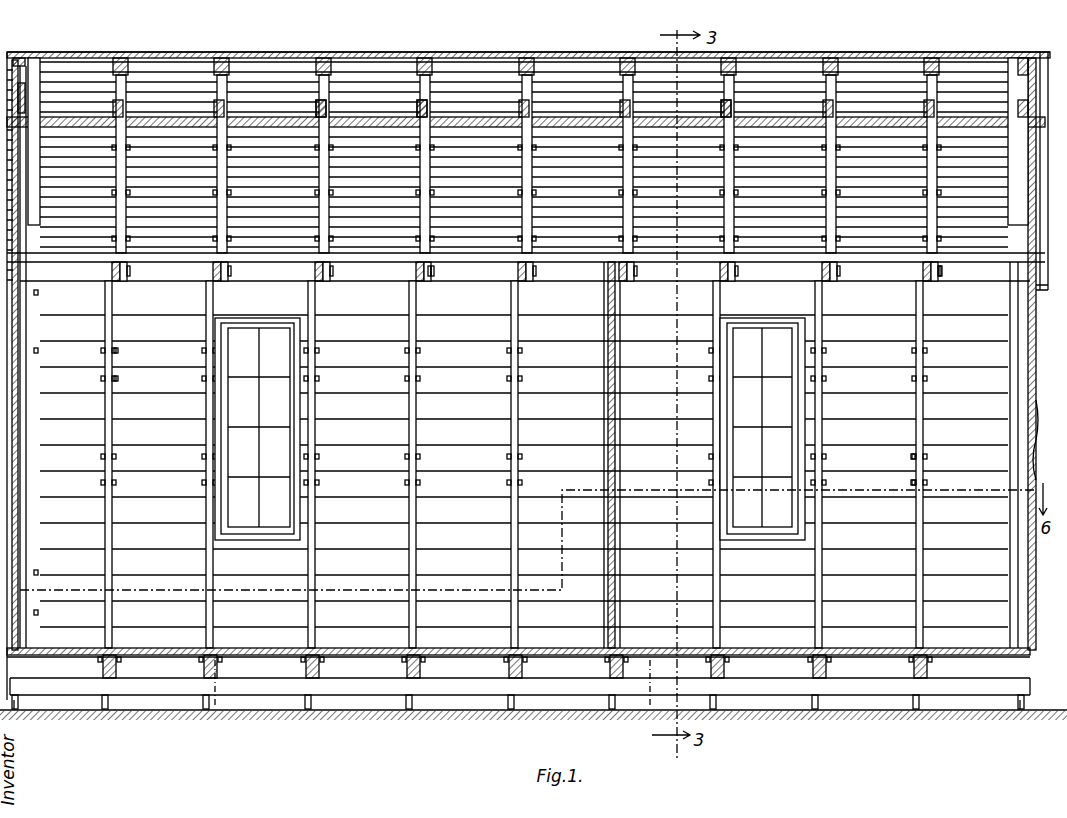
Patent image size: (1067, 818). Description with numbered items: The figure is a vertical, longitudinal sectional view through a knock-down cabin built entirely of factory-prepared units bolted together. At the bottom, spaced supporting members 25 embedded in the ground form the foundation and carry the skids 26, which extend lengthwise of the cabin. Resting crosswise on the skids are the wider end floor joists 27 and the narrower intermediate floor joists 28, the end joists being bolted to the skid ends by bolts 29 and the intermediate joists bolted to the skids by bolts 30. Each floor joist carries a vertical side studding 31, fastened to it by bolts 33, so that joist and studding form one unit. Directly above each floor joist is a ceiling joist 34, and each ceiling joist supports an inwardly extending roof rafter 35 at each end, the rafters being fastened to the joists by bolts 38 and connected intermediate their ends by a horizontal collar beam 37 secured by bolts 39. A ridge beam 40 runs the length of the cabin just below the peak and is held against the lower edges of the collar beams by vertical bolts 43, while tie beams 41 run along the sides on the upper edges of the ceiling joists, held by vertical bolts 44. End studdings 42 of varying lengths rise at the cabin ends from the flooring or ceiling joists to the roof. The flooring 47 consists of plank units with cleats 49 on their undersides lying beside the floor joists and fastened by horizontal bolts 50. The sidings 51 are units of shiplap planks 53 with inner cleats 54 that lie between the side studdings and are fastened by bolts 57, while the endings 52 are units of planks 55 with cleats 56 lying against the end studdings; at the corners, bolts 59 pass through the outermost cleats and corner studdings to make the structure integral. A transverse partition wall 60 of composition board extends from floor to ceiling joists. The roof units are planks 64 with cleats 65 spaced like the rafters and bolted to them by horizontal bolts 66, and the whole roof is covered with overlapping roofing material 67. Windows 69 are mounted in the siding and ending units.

The supporting members 25 is at (112, 700).
The skids 26 is at (338, 695).
The end floor joists 27 is at (22, 640).
The intermediate floor joists 28 is at (112, 656).
The headed and nutted bolts 29 is at (18, 700).
The headed and nutted bolts 30 is at (215, 706).
The side studding 31 is at (105, 507).
The headed and nutted bolts 33 is at (40, 660).
The ceiling joists 34 is at (232, 272).
The roof rafter 35 is at (230, 70).
The collar beam 37 is at (438, 112).
The headed and nutted bolts 38 is at (130, 272).
The headed and nutted bolts 39 is at (335, 110).
The ridge beam 40 is at (863, 117).
The tie beams 41 is at (366, 262).
The end studdings 42 is at (36, 176).
The headed and nutted bolts 43 is at (24, 98).
The headed and nutted bolts 44 is at (530, 282).
The flooring 47 is at (455, 657).
The cleats 49 is at (1008, 684).
The headed and nutted bolts 50 is at (40, 668).
The sidings 51 is at (477, 486).
The endings 52 is at (1038, 462).
The planks 53 is at (445, 486).
The cleats 54 is at (100, 378).
The planks 55 is at (1036, 375).
The cleats 56 is at (20, 434).
The headed and nutted bolts 57 is at (198, 352).
The headed and nutted bolts 59 is at (40, 350).
The transverse partition wall 60 is at (606, 432).
The planks 64 is at (96, 42).
The cleats 65 is at (318, 68).
The headed and nutted bolts 66 is at (116, 70).
The roofing material 67 is at (262, 52).
The windows 69 is at (268, 442).